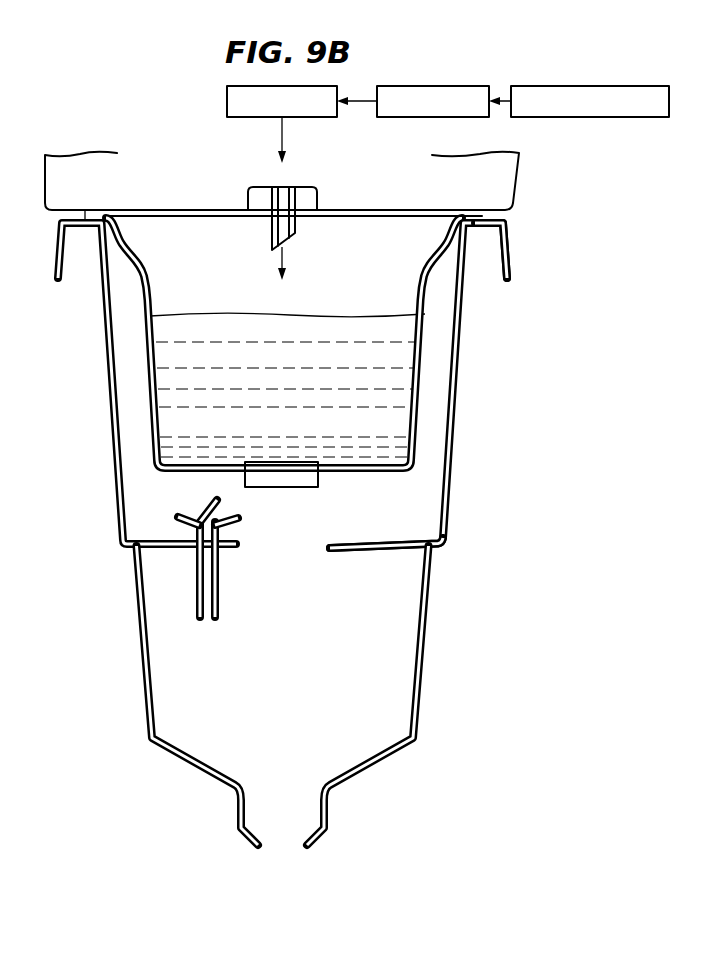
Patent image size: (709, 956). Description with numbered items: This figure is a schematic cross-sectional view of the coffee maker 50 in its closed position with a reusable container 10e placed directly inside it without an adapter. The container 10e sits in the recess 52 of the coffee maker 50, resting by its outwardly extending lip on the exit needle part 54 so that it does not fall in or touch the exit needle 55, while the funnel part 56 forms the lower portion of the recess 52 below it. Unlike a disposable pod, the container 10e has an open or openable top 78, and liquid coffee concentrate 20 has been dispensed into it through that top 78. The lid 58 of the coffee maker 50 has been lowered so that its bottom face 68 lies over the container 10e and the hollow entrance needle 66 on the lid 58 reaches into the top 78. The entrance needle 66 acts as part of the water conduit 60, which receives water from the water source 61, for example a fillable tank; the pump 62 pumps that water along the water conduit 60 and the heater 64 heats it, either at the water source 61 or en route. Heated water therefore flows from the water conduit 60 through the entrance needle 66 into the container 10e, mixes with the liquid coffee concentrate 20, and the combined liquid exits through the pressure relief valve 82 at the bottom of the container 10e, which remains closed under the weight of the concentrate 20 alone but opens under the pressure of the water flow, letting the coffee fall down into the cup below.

The coffee maker 50 is at (549, 171).
The lid 58 is at (82, 160).
The water conduit 60 is at (284, 189).
The entrance needle 66 is at (270, 240).
The heater 64 is at (227, 101).
The pump 62 is at (432, 86).
The water source 61 is at (590, 86).
The bottom face 68 is at (511, 213).
The top 78 is at (364, 219).
The liquid coffee concentrate 20 is at (250, 323).
The container 10e is at (260, 342).
The exit needle part 54 is at (458, 400).
The recess 52 is at (428, 495).
The exit needle 55 is at (208, 504).
The pressure relief valve 82 is at (290, 488).
The funnel part 56 is at (430, 652).